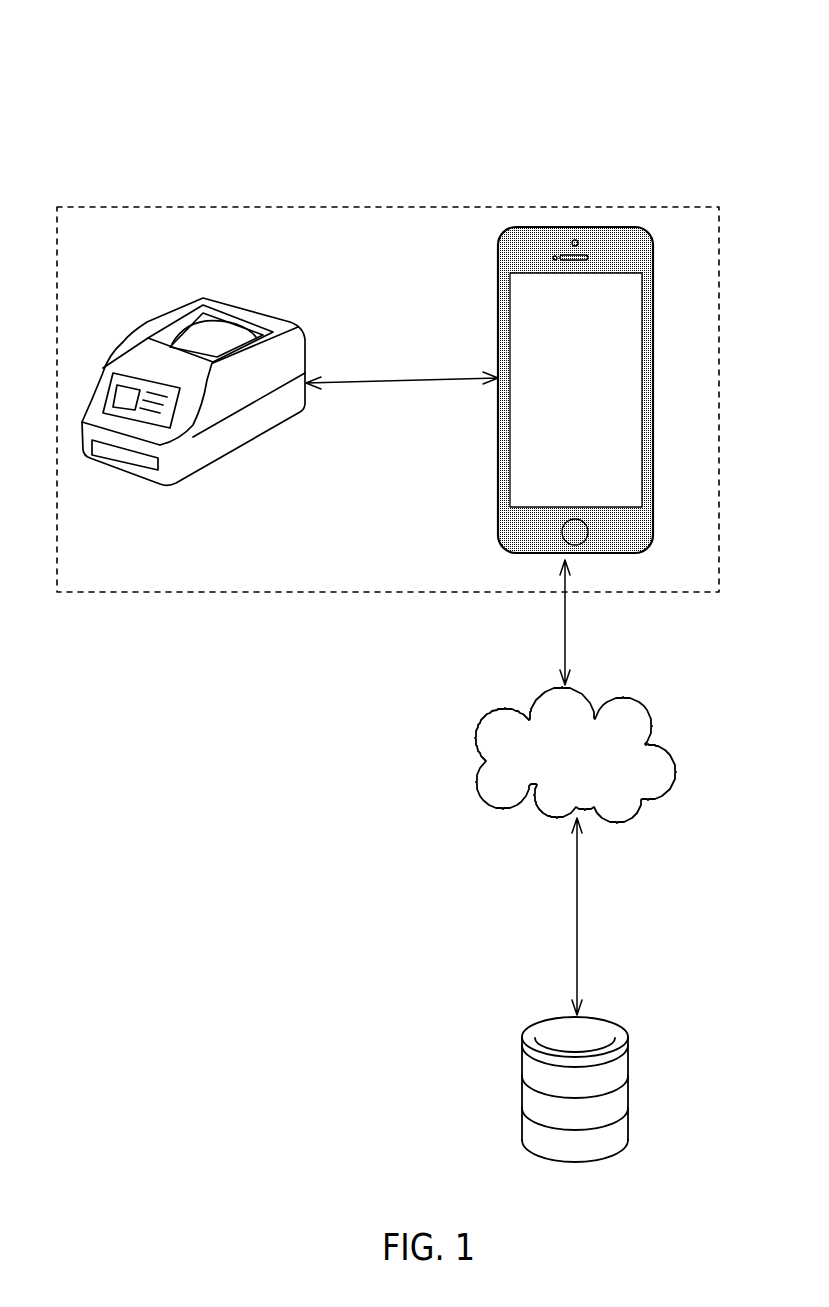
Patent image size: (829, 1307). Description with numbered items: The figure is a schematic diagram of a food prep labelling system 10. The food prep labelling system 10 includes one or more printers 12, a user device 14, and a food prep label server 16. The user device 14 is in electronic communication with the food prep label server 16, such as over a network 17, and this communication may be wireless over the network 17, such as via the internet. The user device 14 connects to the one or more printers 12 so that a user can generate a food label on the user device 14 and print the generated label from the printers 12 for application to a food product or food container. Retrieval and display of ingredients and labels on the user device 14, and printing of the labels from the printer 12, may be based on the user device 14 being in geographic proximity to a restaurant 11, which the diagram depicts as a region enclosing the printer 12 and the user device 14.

The food prep labelling system 10 is at (563, 183).
The restaurant 11 is at (287, 592).
The printer 12 is at (205, 297).
The user device 14 is at (653, 392).
The food prep label server 16 is at (630, 1070).
The network 17 is at (653, 718).